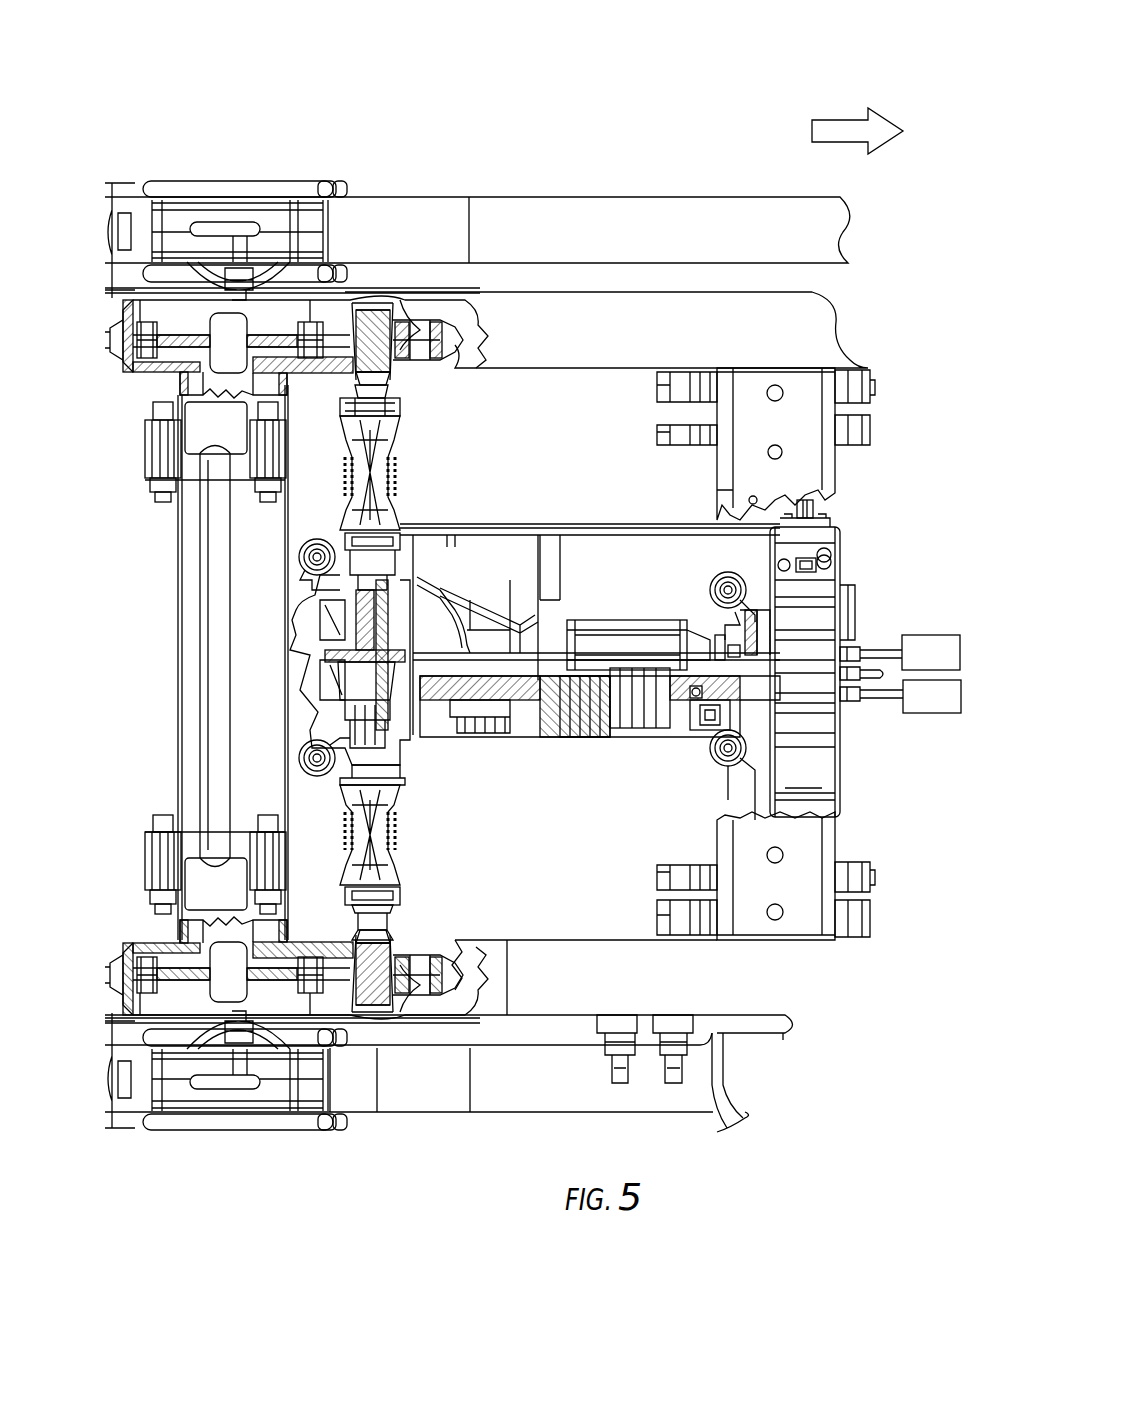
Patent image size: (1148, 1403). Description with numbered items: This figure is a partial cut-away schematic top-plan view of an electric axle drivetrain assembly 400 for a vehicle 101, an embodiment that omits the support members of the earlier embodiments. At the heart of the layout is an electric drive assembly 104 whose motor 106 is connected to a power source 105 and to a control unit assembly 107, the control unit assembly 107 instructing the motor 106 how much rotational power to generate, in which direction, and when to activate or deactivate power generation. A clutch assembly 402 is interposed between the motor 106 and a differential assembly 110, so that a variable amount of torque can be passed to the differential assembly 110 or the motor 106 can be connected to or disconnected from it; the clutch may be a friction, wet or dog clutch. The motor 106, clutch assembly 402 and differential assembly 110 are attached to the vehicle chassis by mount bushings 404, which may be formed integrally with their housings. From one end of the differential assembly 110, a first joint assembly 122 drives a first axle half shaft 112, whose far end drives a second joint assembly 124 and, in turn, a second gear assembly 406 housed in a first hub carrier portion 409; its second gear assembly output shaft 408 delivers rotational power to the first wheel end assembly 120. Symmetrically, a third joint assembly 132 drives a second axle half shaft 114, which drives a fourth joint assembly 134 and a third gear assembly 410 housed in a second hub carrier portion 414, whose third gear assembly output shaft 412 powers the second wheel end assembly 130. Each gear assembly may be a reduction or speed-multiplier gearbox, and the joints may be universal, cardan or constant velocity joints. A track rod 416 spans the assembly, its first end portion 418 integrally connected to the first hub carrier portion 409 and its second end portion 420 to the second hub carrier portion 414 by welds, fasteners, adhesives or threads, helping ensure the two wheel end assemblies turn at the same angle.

The vehicle 101 is at (697, 58).
The electric drive assembly 104 is at (868, 787).
The power source 105 is at (948, 710).
The motor 106 is at (812, 658).
The control unit assembly 107 is at (947, 666).
The differential assembly 110 is at (305, 695).
The first axle half shaft 112 is at (382, 470).
The second axle half shaft 114 is at (384, 826).
The first wheel end assembly 120 is at (352, 145).
The first joint assembly 122 is at (445, 505).
The second joint assembly 124 is at (428, 407).
The second wheel end assembly 130 is at (315, 1178).
The third joint assembly 132 is at (428, 782).
The fourth joint assembly 134 is at (450, 888).
The electric axle drivetrain assembly 400 is at (695, 133).
The clutch assembly 402 is at (600, 742).
The mount bushings 404 is at (721, 578).
The second gear assembly 406 is at (512, 340).
The second gear assembly output shaft 408 is at (225, 337).
The first hub carrier portion 409 is at (401, 312).
The third gear assembly 410 is at (120, 915).
The third gear assembly output shaft 412 is at (235, 975).
The second hub carrier portion 414 is at (420, 1010).
The track rod 416 is at (212, 672).
The first end portion of the track rod 418 is at (215, 510).
The second end portion of the track rod 420 is at (213, 825).